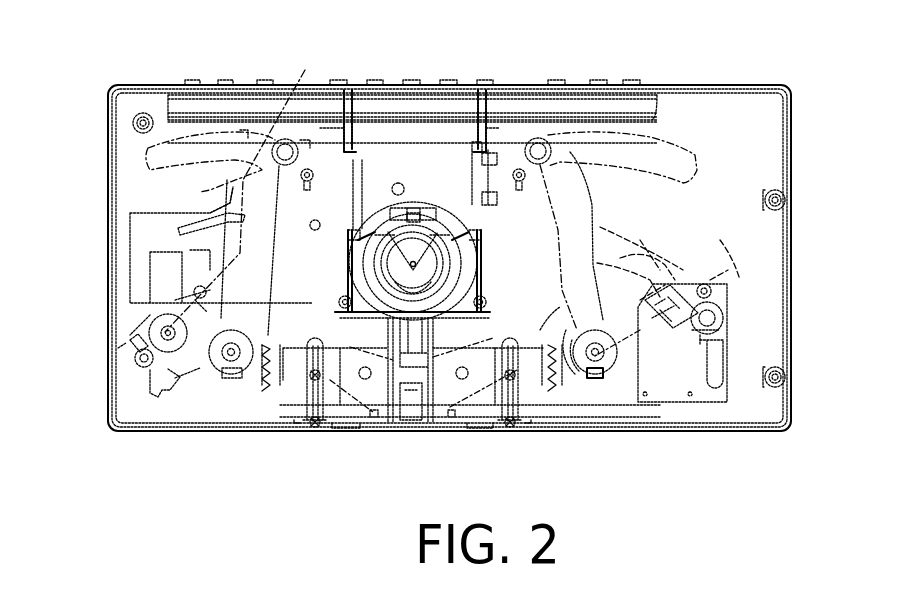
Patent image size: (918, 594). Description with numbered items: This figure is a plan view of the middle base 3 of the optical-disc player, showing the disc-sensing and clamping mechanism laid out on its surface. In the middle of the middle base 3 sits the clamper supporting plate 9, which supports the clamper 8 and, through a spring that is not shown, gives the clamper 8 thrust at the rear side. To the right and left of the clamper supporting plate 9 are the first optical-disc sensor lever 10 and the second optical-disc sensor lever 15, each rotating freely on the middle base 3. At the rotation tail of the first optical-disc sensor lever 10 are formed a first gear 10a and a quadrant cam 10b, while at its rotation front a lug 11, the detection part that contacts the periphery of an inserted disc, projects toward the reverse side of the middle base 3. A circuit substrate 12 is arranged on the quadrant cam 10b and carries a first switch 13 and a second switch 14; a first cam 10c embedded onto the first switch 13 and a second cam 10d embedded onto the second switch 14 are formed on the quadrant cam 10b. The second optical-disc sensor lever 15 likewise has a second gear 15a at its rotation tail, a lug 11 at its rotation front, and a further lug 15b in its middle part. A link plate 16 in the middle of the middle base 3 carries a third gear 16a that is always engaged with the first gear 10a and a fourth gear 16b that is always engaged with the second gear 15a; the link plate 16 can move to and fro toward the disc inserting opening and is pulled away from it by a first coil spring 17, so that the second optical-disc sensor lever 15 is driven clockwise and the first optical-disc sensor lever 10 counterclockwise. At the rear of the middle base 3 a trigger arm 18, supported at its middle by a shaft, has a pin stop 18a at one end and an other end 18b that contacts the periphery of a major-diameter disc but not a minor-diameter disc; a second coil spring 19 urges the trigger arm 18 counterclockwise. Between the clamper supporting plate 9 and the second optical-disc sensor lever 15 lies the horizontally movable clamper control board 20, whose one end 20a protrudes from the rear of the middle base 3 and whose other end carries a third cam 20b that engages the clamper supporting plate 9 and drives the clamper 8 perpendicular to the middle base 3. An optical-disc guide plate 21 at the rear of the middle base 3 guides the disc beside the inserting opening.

The middle base 3 is at (106, 190).
The clamper 8 is at (455, 273).
The clamper supporting plate 9 is at (415, 146).
The first optical-disc sensor lever 10 is at (605, 227).
The first gear 10a is at (567, 385).
The quadrant cam 10b is at (641, 250).
The first cam 10c is at (710, 296).
The second cam 10d is at (717, 267).
The lug (detection part) 11 is at (302, 78).
The circuit substrate 12 is at (720, 398).
The first switch 13 is at (733, 322).
The second switch 14 is at (686, 272).
The second optical-disc sensor lever 15 is at (215, 182).
The second gear 15a is at (267, 380).
The lug 15b is at (215, 223).
The link plate 16 is at (442, 427).
The third gear 16a is at (555, 384).
The fourth gear 16b is at (278, 386).
The first coil spring 17 is at (310, 430).
The trigger arm 18 is at (150, 388).
The pin stop 18a is at (132, 324).
The other end of the trigger arm 18b is at (200, 415).
The second coil spring 19 is at (150, 340).
The clamper control board 20 is at (287, 297).
The one end of the clamper control board 20a is at (130, 272).
The third cam 20b is at (318, 220).
The optical-disc guide plate 21 is at (265, 88).